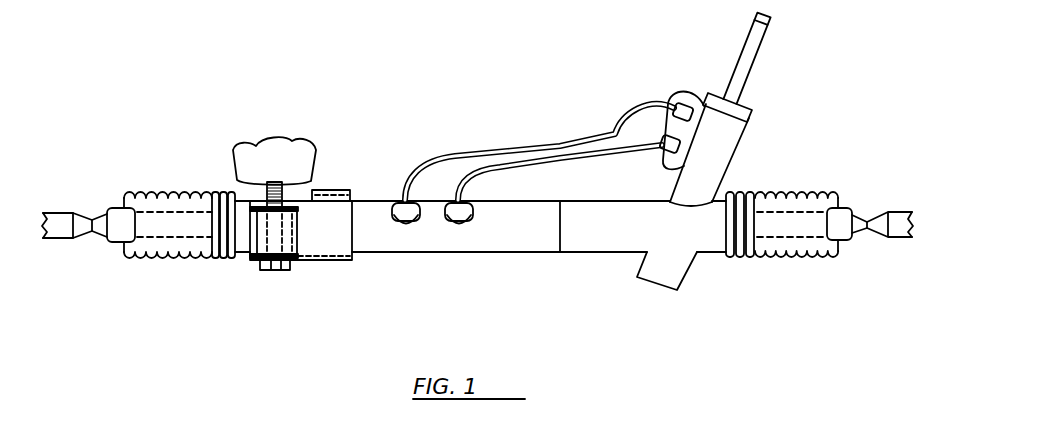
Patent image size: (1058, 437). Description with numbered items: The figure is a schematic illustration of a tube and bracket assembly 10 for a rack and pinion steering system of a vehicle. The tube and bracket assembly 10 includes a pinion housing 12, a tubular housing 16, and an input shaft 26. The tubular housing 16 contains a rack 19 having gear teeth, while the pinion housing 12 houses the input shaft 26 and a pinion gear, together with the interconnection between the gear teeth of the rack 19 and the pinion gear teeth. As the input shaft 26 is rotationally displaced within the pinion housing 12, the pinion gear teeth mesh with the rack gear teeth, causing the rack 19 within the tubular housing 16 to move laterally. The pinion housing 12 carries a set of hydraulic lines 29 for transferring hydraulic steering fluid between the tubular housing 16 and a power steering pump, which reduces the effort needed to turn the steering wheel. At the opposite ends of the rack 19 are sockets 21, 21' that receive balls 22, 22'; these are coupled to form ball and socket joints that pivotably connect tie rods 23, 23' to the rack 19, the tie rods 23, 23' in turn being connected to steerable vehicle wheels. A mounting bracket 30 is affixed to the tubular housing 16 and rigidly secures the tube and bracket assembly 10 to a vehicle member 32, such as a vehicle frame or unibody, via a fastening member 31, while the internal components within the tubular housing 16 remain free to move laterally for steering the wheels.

The tube and bracket assembly 10 is at (397, 94).
The pinion housing 12 is at (717, 153).
The tubular housing 16 is at (433, 240).
The rack 19 is at (795, 208).
The socket 21 is at (171, 202).
The socket 21' is at (789, 251).
The ball 22 is at (108, 187).
The ball 22' is at (855, 268).
The tie rod 23 is at (67, 180).
The tie rod 23' is at (894, 274).
The input shaft 26 is at (760, 65).
The hydraulic lines 29 is at (620, 130).
The mounting bracket 30 is at (323, 228).
The fastening member 31 is at (273, 272).
The vehicle member 32 is at (274, 172).